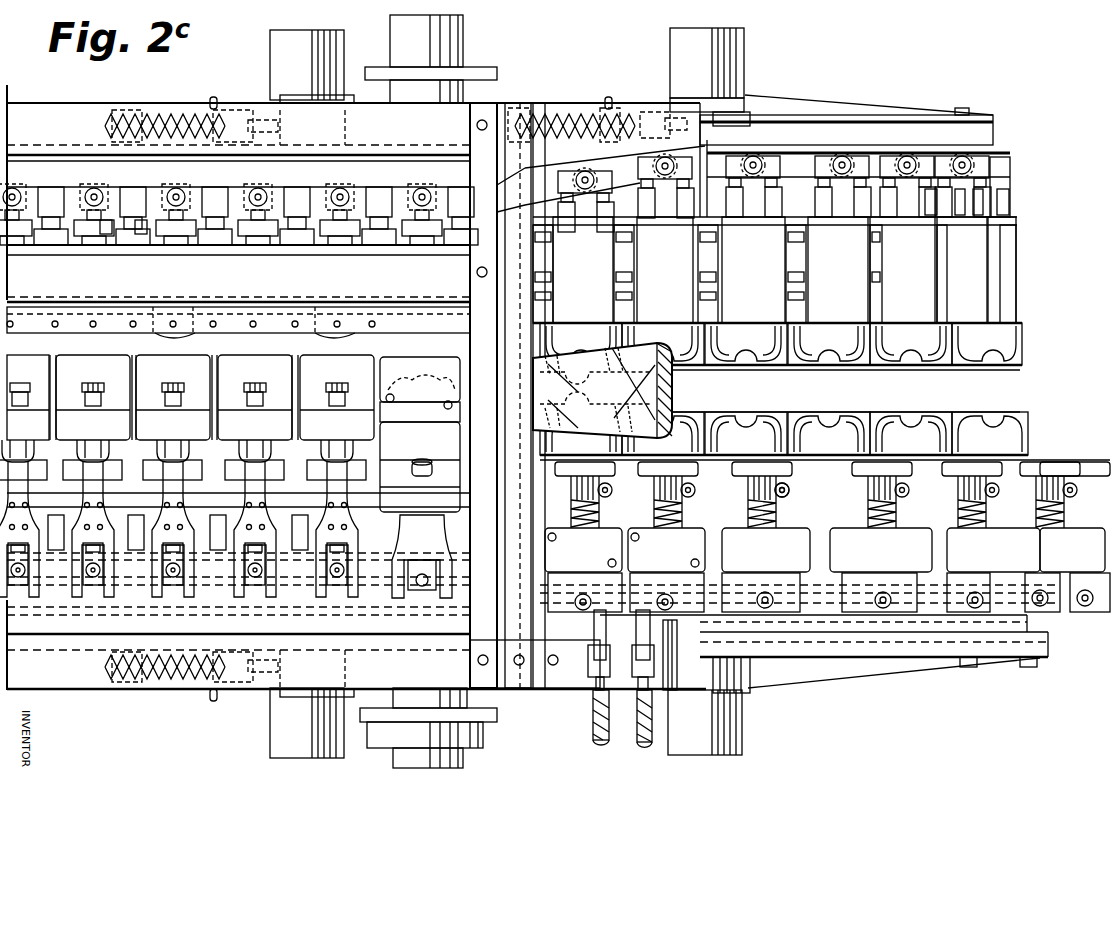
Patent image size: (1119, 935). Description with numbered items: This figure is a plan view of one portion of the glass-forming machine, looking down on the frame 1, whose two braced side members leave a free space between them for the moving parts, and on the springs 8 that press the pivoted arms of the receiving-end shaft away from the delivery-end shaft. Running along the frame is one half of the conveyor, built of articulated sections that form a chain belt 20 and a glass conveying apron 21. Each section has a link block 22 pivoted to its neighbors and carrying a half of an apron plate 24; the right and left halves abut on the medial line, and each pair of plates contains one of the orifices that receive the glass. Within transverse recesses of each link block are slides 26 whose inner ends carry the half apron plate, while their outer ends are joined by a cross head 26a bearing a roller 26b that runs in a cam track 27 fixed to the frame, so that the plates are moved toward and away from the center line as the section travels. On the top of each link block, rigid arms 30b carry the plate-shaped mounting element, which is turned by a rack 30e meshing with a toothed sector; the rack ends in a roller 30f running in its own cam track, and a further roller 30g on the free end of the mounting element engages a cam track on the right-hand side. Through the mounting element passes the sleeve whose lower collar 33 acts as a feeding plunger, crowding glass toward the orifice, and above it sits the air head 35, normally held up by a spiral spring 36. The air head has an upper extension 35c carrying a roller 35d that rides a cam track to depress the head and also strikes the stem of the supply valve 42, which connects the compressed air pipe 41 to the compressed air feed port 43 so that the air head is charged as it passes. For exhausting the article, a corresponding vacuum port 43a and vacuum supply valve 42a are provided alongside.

The frame 1 is at (128, 100).
The springs 8 is at (560, 112).
The chain belt 20 is at (1017, 286).
The glass conveying apron 21 is at (1023, 350).
The link block 22 is at (775, 270).
The apron plate 24 is at (1000, 418).
The slides 26 is at (143, 217).
The cross head 26a is at (153, 195).
The roller 26b is at (255, 190).
The cam track 27 is at (300, 193).
The rigid arms 30b is at (110, 447).
The rack 30e is at (225, 450).
The roller 30f is at (147, 590).
The roller 30g is at (790, 490).
The collar 33 is at (722, 472).
The air head 35 is at (195, 368).
The upper extension 35c is at (312, 420).
The roller 35d is at (952, 598).
The spiral spring 36 is at (782, 512).
The pipe 41 is at (630, 718).
The supply valve 42 is at (600, 637).
The vacuum supply valve 42a is at (650, 635).
The compressed air feed port 43 is at (572, 595).
The vacuum port 43a is at (652, 595).